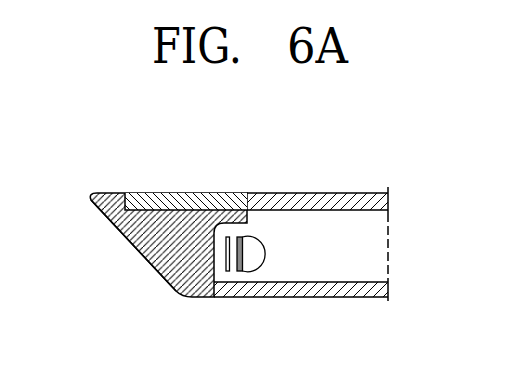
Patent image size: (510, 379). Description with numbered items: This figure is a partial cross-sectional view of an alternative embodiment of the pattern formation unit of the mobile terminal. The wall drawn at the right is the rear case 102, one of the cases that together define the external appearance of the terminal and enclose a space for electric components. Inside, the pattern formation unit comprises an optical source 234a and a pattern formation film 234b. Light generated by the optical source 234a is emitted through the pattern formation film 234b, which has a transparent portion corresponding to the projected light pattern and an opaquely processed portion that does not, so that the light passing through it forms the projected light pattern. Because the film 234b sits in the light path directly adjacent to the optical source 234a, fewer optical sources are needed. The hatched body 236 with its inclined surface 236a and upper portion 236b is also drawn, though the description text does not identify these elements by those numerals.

The rear case 102 is at (343, 293).
The optical source 234a is at (243, 262).
The pattern formation film 234b is at (226, 271).
The cover member 236 is at (125, 228).
The inclined surface 236a is at (162, 278).
The coupling portion 236b is at (182, 227).